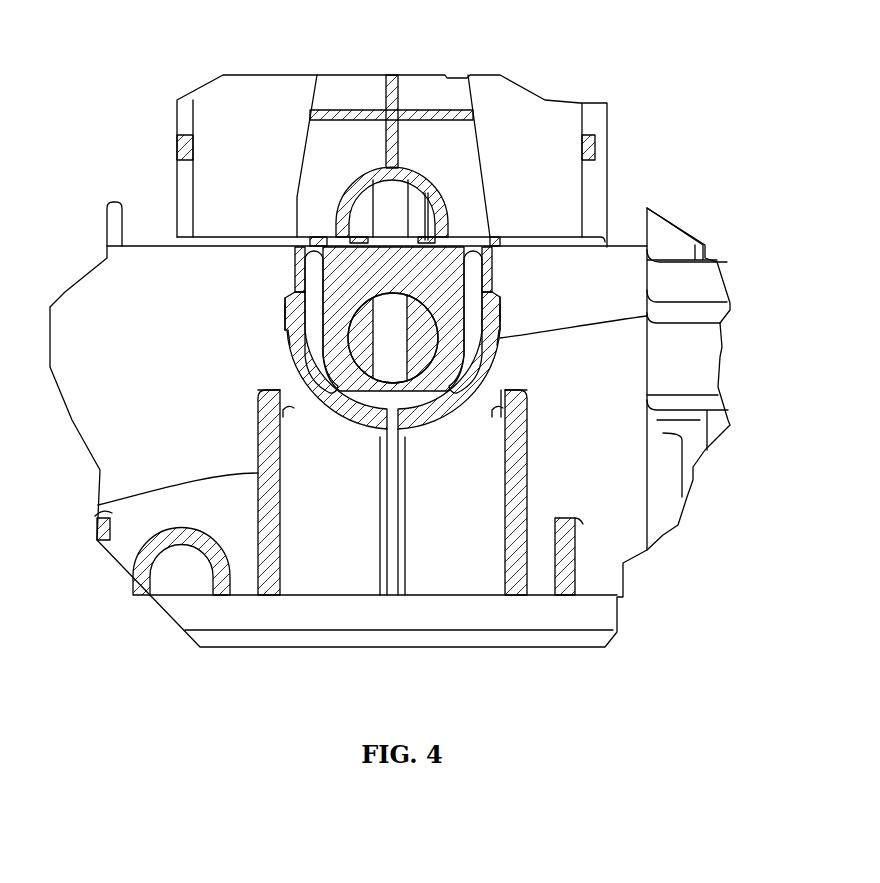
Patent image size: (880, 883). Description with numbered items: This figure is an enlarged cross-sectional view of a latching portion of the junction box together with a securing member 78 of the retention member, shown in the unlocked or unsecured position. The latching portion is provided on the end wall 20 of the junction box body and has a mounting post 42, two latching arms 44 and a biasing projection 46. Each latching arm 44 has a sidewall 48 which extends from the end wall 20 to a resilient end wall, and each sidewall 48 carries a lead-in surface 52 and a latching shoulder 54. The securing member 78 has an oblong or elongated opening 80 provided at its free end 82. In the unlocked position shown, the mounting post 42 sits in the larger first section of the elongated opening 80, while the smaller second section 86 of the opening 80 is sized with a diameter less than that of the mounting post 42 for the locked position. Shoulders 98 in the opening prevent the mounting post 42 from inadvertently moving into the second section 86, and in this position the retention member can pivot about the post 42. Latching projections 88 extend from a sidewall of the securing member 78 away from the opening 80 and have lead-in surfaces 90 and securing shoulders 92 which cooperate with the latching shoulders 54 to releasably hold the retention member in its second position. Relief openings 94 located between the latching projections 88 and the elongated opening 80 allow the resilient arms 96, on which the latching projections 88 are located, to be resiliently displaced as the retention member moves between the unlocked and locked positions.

The end wall 20 is at (160, 349).
The mounting post 42 is at (428, 378).
The latching arm 44 is at (550, 416).
The biasing projection 46 is at (393, 547).
The sidewall 48 is at (98, 505).
The lead-in surface 52 is at (295, 417).
The latching shoulder 54 is at (284, 417).
The securing member 78 is at (428, 93).
The elongated opening 80 is at (442, 243).
The free end 82 is at (435, 405).
The second section 86 is at (398, 190).
The latching projection 88 is at (285, 313).
The lead-in surface 90 is at (292, 333).
The securing shoulder 92 is at (293, 287).
The relief opening 94 is at (300, 245).
The resilient arm 96 is at (293, 262).
The shoulder 98 is at (370, 297).